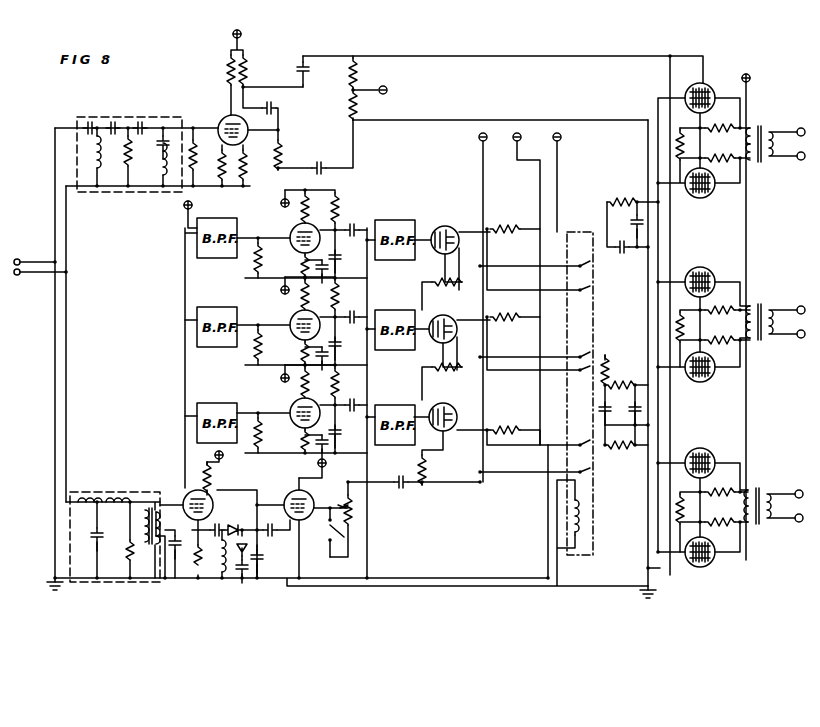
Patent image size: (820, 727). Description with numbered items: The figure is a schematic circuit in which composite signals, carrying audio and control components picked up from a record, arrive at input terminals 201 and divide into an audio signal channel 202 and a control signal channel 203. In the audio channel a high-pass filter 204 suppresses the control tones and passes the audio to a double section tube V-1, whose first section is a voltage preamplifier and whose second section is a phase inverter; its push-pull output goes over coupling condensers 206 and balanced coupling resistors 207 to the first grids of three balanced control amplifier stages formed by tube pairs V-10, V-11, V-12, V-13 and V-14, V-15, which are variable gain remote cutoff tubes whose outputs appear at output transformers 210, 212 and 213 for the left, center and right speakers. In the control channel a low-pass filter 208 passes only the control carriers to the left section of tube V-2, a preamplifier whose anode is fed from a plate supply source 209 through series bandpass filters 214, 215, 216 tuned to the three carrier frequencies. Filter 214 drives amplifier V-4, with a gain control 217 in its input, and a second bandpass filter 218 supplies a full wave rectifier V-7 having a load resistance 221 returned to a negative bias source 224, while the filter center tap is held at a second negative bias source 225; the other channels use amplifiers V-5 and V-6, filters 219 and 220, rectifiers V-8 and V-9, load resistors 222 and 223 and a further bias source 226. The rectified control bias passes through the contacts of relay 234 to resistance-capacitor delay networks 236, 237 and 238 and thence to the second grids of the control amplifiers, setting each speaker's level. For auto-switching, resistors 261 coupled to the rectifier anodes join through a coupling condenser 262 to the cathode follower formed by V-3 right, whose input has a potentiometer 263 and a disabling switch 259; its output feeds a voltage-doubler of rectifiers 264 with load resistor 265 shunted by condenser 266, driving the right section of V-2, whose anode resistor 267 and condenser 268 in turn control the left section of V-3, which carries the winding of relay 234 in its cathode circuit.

The input terminals 201 is at (36, 264).
The audio signal channel 202 is at (67, 222).
The control signal channel 203 is at (64, 334).
The high-pass filter 204 is at (103, 118).
The coupling condensers 206 is at (296, 65).
The balanced coupling resistors 207 is at (357, 77).
The low-pass filter 208 is at (97, 500).
The plate supply source 209 is at (184, 205).
The output transformer 210 is at (752, 130).
The output transformer 212 is at (752, 308).
The output transformer 213 is at (750, 492).
The bandpass filter 214 is at (204, 218).
The bandpass filter 215 is at (204, 308).
The bandpass filter 216 is at (204, 404).
The gain control 217 is at (262, 262).
The bandpass filter 218 is at (382, 221).
The bandpass filter 219 is at (382, 311).
The bandpass filter 220 is at (382, 406).
The load resistance 221 is at (496, 229).
The load resistor 222 is at (496, 317).
The load resistor 223 is at (496, 430).
The source of negative bias potential 224 is at (520, 141).
The source of negative bias 225 is at (478, 137).
The bias terminal 226 is at (562, 138).
The relay 234 is at (592, 520).
The double resistance-capacitor delay network 236 is at (598, 224).
The delay circuit 237 is at (609, 387).
The delay circuit 238 is at (608, 450).
The switch 259 is at (346, 534).
The resistor 261 is at (425, 472).
The coupling condenser 262 is at (400, 486).
The variable control potentiometer 263 is at (352, 500).
The rectifiers 264 is at (242, 530).
The load resistor 265 is at (228, 579).
The condenser 266 is at (198, 578).
The resistor 267 is at (214, 484).
The condenser 268 is at (259, 562).
The double section tube V-1 is at (220, 122).
The tube V-2 is at (183, 503).
The tube V-3 is at (287, 496).
The amplifier V-4 is at (292, 235).
The amplifier V-5 is at (292, 323).
The amplifier V-6 is at (292, 411).
The full wave rectifier V-7 is at (455, 226).
The rectifier V-8 is at (453, 315).
The rectifier V-9 is at (453, 403).
The control amplifier tube V-10 is at (693, 92).
The control amplifier tube V-11 is at (712, 196).
The control amplifier tube V-12 is at (718, 278).
The control amplifier tube V-13 is at (710, 382).
The control amplifier tube V-14 is at (715, 458).
The control amplifier tube V-15 is at (707, 568).